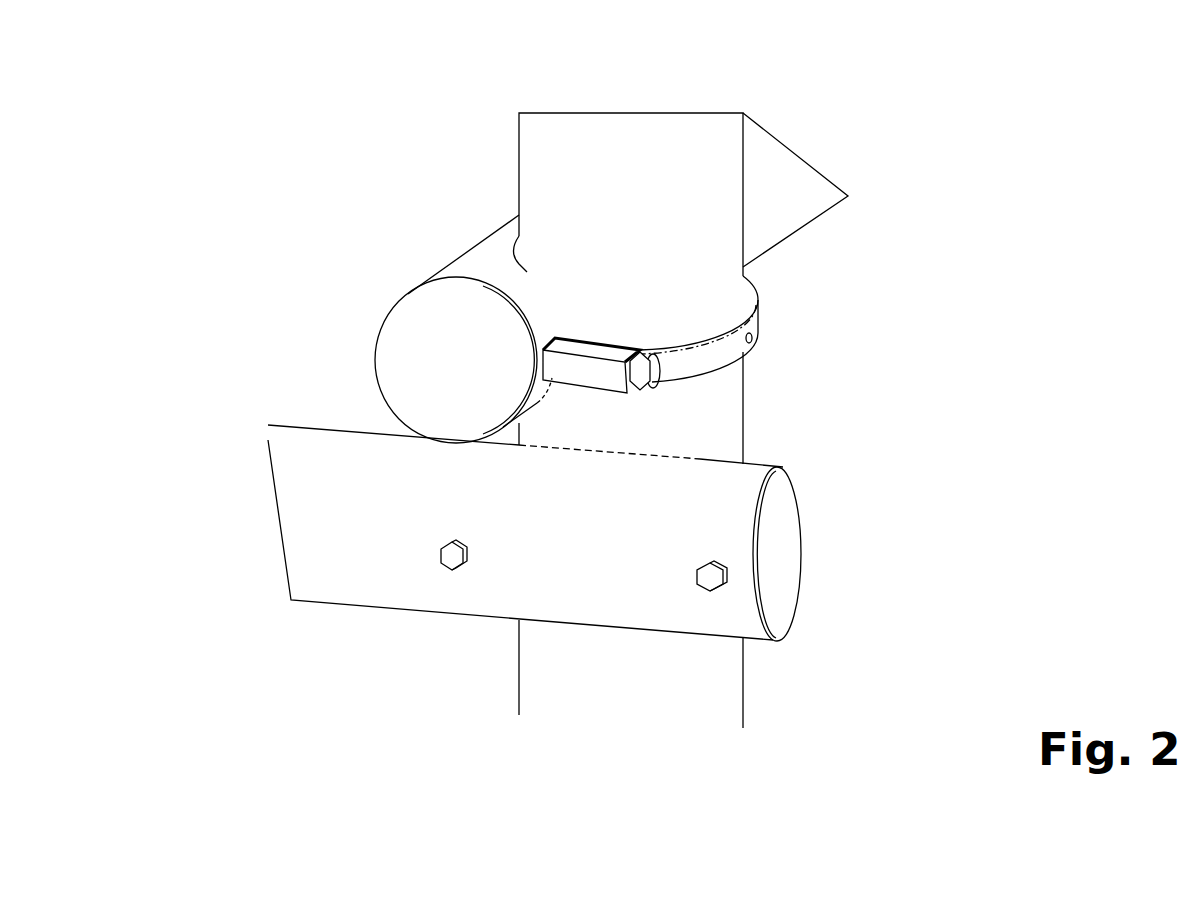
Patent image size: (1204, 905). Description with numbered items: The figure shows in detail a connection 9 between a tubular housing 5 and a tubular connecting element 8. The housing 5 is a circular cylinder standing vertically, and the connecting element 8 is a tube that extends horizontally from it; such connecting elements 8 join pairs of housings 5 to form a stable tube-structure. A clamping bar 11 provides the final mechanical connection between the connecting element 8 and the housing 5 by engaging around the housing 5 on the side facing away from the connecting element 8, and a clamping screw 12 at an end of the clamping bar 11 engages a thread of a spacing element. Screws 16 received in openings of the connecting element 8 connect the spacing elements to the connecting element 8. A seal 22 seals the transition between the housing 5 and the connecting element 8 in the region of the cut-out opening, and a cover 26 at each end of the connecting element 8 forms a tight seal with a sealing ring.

The tubular housing 5 is at (690, 152).
The connecting element 8 is at (813, 218).
The connection 9 is at (453, 205).
The clamping bar 11 is at (750, 360).
The clamping screw 12 is at (640, 367).
The third and fourth screws 16 is at (707, 580).
The seal 22 is at (519, 257).
The cover 26 is at (442, 377).